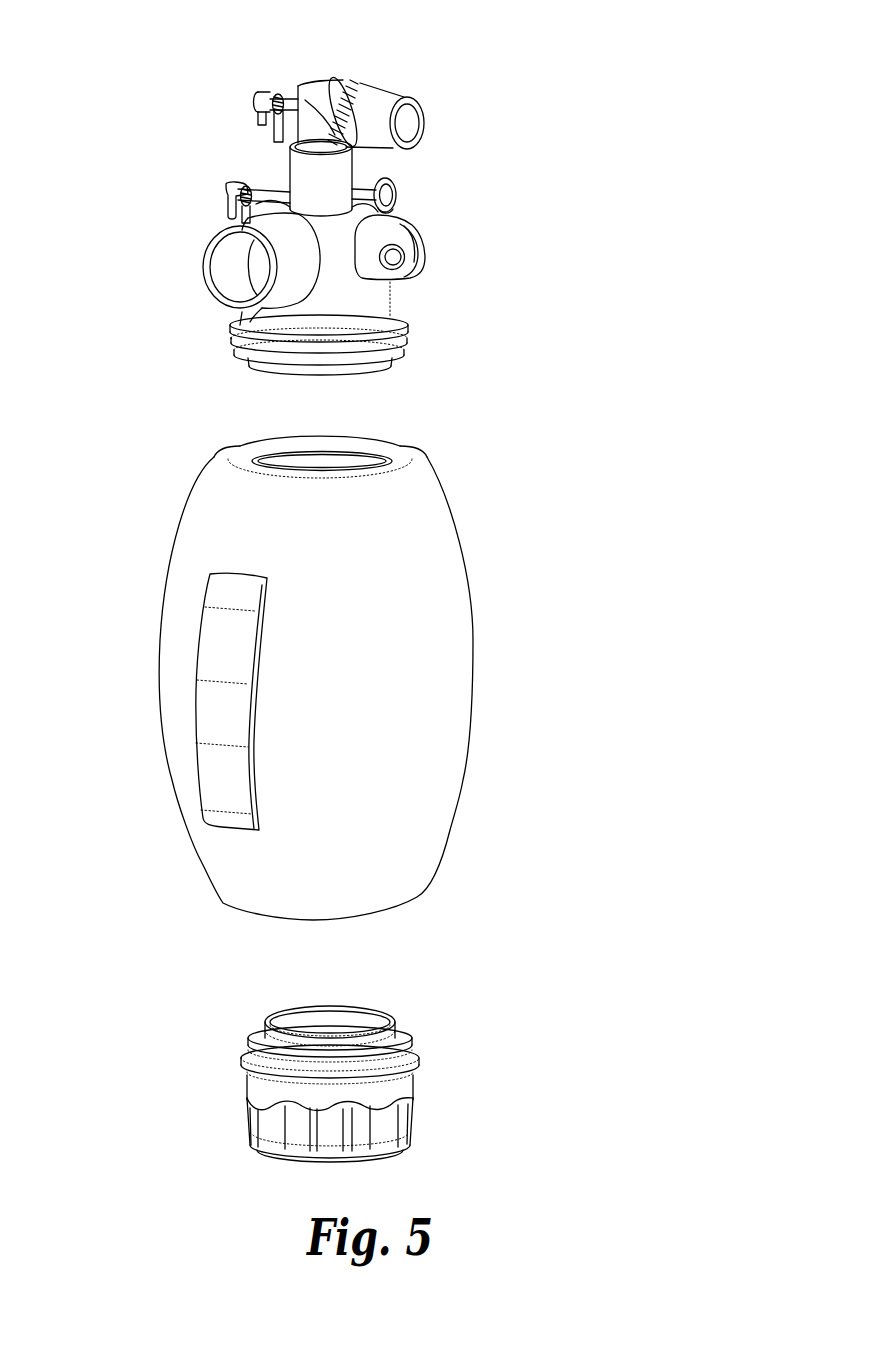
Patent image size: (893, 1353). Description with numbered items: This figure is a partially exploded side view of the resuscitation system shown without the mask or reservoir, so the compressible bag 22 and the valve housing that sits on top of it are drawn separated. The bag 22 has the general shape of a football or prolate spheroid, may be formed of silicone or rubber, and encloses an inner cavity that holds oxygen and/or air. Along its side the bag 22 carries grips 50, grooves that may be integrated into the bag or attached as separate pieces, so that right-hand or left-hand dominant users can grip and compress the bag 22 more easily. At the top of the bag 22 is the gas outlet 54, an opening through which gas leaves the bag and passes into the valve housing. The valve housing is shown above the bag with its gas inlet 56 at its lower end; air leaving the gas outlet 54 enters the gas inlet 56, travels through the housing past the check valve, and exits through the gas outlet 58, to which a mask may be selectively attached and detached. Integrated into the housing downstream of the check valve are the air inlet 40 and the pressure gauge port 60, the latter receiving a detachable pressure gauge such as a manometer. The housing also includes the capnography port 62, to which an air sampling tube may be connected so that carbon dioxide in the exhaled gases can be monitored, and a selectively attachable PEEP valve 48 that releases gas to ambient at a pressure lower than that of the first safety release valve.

The bag 22 is at (450, 645).
The air inlet 40 is at (260, 187).
The PEEP valve 48 is at (237, 268).
The grips 50 is at (220, 707).
The gas outlet 54 is at (338, 458).
The gas inlet 56 is at (272, 388).
The gas outlet 58 is at (422, 126).
The pressure gauge port 60 is at (357, 185).
The capnography port 62 is at (292, 90).